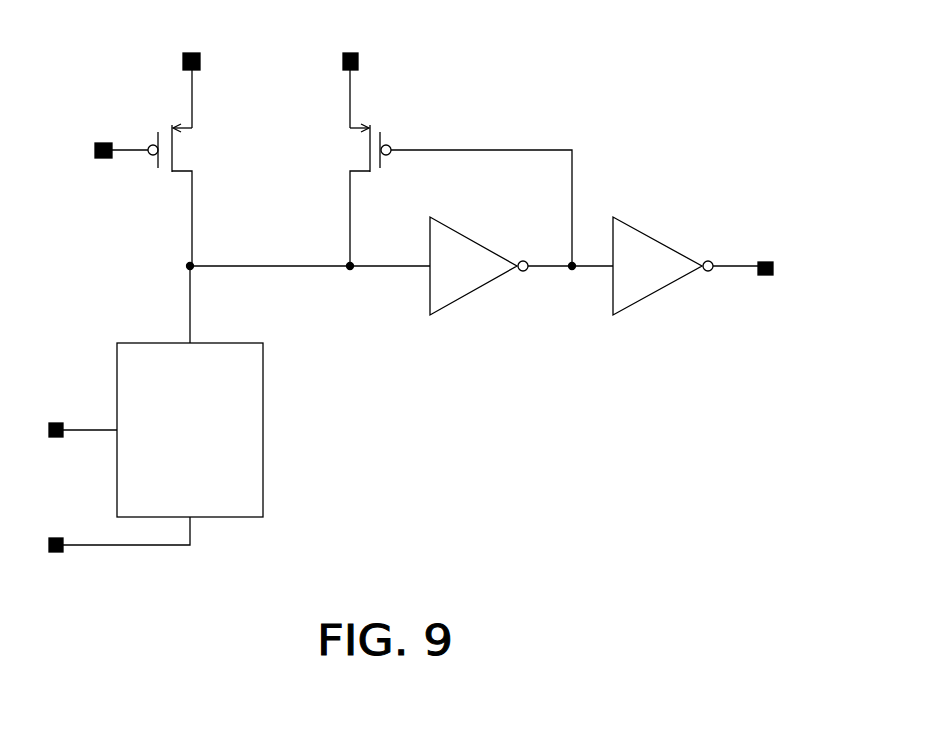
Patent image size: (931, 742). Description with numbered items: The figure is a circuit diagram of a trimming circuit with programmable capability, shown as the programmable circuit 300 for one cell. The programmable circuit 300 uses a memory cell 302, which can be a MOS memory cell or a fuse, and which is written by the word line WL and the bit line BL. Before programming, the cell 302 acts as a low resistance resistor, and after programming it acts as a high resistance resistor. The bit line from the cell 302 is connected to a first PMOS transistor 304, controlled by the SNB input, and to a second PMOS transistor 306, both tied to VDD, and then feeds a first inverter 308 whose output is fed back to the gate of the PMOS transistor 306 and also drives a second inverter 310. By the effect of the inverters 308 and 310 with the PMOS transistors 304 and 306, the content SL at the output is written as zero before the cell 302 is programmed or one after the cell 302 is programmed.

The programmable circuit 300 is at (601, 72).
The memory cell 302 is at (265, 412).
The PMOS transistor 304 is at (183, 151).
The PMOS transistor 306 is at (360, 149).
The inverter 308 is at (475, 240).
The inverter 310 is at (660, 240).